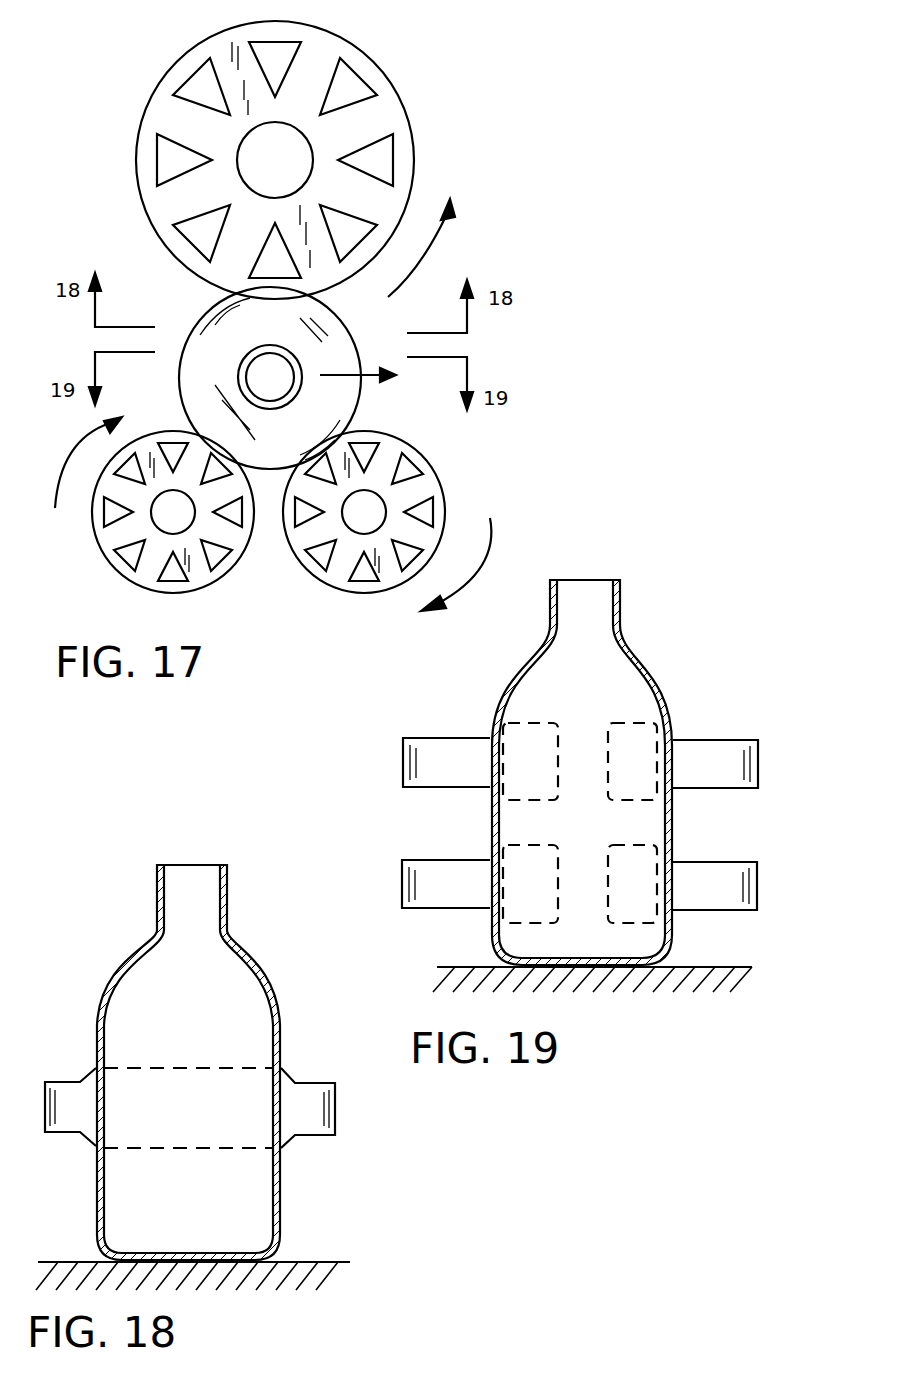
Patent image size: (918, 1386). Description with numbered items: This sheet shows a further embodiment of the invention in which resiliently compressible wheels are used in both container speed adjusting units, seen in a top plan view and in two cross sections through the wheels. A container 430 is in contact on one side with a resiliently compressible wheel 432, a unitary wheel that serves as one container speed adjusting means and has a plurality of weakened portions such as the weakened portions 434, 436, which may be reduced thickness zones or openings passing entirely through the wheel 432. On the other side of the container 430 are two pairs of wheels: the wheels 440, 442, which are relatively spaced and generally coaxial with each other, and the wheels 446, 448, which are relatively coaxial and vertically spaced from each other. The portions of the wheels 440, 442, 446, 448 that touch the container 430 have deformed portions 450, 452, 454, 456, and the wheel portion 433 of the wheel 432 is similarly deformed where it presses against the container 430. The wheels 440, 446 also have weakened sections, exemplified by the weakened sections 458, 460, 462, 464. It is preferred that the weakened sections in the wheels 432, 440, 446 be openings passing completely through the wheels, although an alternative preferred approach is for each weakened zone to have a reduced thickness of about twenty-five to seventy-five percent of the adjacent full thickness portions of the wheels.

In FIG. 17, the container 430 is at (338, 342).
In FIG. 19, the container 430 is at (620, 625).
In FIG. 18, the container 430 is at (223, 903).
In FIG. 17, the resiliently compressible wheel 432 is at (432, 154).
In FIG. 18, the resiliently compressible wheel 432 is at (313, 1132).
In FIG. 18, the wheel portion 433 is at (205, 1078).
In FIG. 17, the weakened portion 434 is at (360, 97).
In FIG. 17, the weakened portion 436 is at (293, 50).
In FIG. 17, the wheel 440 is at (205, 567).
In FIG. 19, the wheel 440 is at (455, 747).
In FIG. 19, the wheel 442 is at (428, 878).
In FIG. 17, the wheel 446 is at (387, 585).
In FIG. 19, the wheel 446 is at (705, 753).
In FIG. 19, the wheel 448 is at (712, 878).
In FIG. 19, the deformed portion 450 is at (537, 722).
In FIG. 19, the deformed portion 452 is at (630, 723).
In FIG. 19, the deformed portion 454 is at (537, 843).
In FIG. 19, the deformed portion 456 is at (630, 840).
In FIG. 17, the weakened section 458 is at (402, 565).
In FIG. 17, the weakened section 460 is at (428, 518).
In FIG. 17, the weakened section 462 is at (128, 565).
In FIG. 17, the weakened section 464 is at (112, 525).